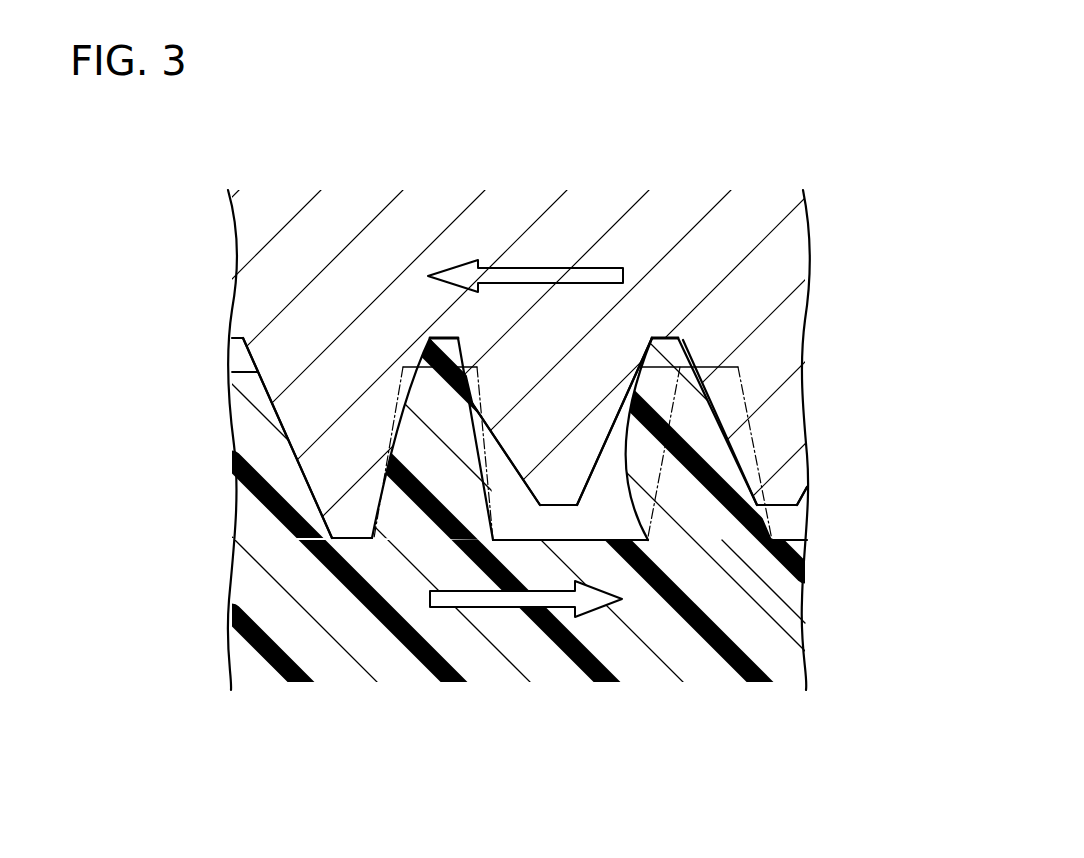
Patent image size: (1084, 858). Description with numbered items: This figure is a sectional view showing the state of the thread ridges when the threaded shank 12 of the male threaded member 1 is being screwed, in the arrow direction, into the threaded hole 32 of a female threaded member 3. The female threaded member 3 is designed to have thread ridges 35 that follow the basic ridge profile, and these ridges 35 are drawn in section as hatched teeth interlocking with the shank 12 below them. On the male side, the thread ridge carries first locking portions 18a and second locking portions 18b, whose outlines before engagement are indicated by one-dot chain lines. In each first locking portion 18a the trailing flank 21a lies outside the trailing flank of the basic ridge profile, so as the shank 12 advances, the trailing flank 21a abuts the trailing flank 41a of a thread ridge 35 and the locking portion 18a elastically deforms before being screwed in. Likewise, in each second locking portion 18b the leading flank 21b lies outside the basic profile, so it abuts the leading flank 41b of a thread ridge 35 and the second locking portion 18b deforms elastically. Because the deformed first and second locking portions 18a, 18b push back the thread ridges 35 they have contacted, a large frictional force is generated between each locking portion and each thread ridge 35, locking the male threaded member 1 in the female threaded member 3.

The male threaded member 1 is at (822, 642).
The female threaded member 3 is at (226, 262).
The threaded shank 12 is at (780, 607).
The first locking portion 18a is at (415, 462).
The second locking portion 18b is at (713, 462).
The trailing flank 21a is at (408, 398).
The leading flank 21b is at (483, 398).
The threaded hole 32 is at (240, 357).
The thread ridge 35 is at (308, 419).
The trailing flank 41a is at (412, 382).
The leading flank 41b is at (495, 425).